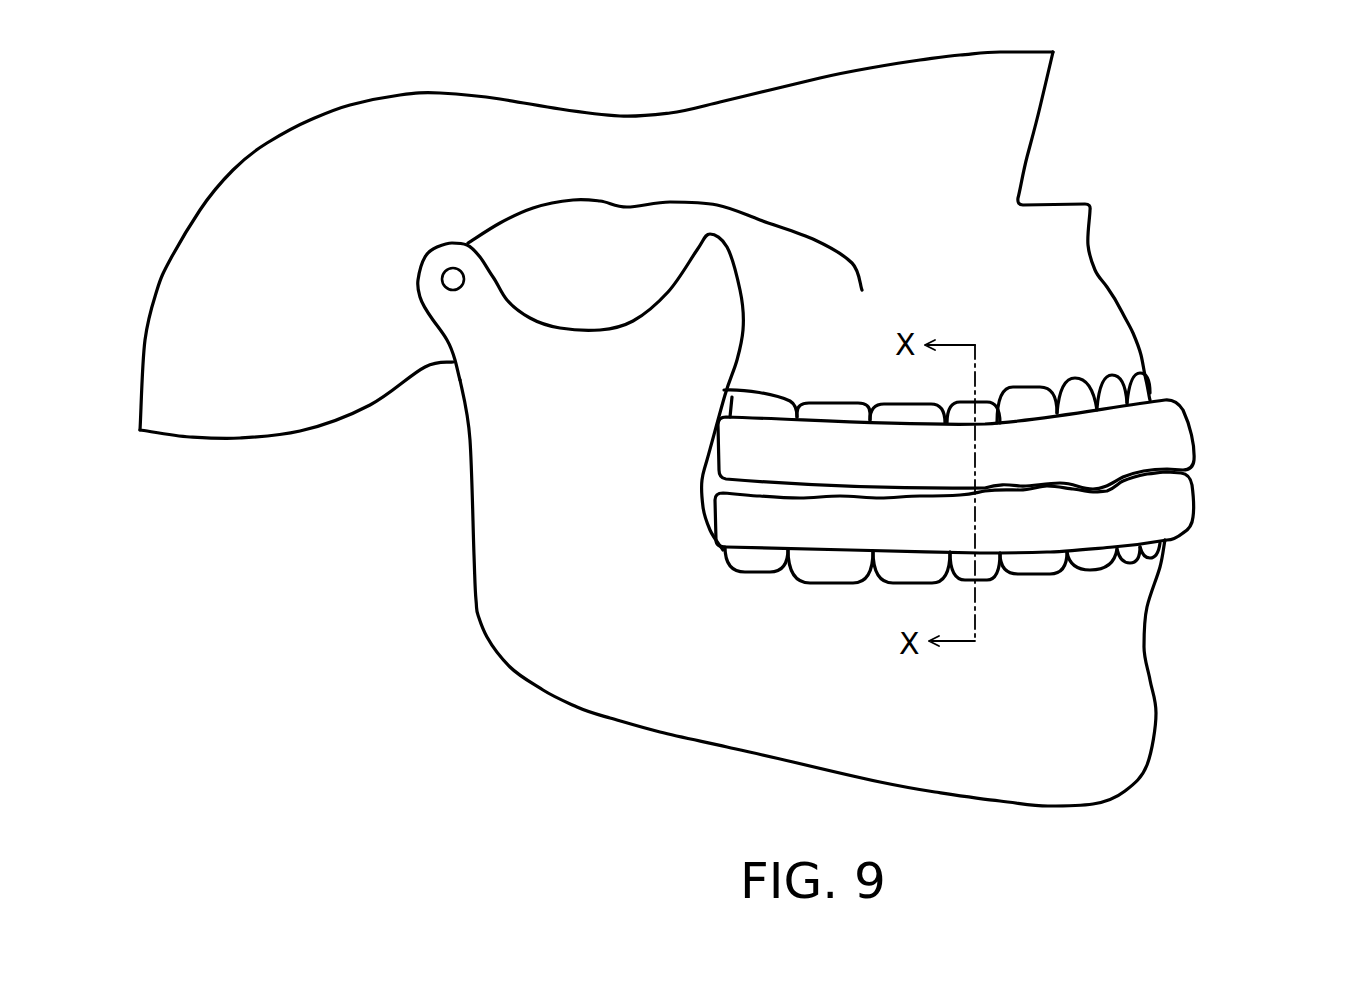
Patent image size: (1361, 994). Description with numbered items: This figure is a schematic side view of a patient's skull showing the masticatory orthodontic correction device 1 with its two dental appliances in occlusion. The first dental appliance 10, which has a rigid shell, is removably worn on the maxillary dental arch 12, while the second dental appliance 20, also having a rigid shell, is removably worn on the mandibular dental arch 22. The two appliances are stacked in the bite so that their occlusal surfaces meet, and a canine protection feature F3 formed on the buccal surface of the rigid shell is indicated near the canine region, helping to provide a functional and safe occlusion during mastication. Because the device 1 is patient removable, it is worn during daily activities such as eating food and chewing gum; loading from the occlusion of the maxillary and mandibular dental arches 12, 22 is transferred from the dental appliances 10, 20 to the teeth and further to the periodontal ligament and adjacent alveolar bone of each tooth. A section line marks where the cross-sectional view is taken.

The masticatory orthodontic correction device 1 is at (1026, 476).
The first dental appliance 10 is at (1193, 442).
The maxillary dental arch 12 is at (1083, 375).
The second dental appliance 20 is at (1008, 512).
The mandibular dental arch 22 is at (1103, 572).
The canine protection feature F3 is at (1100, 490).